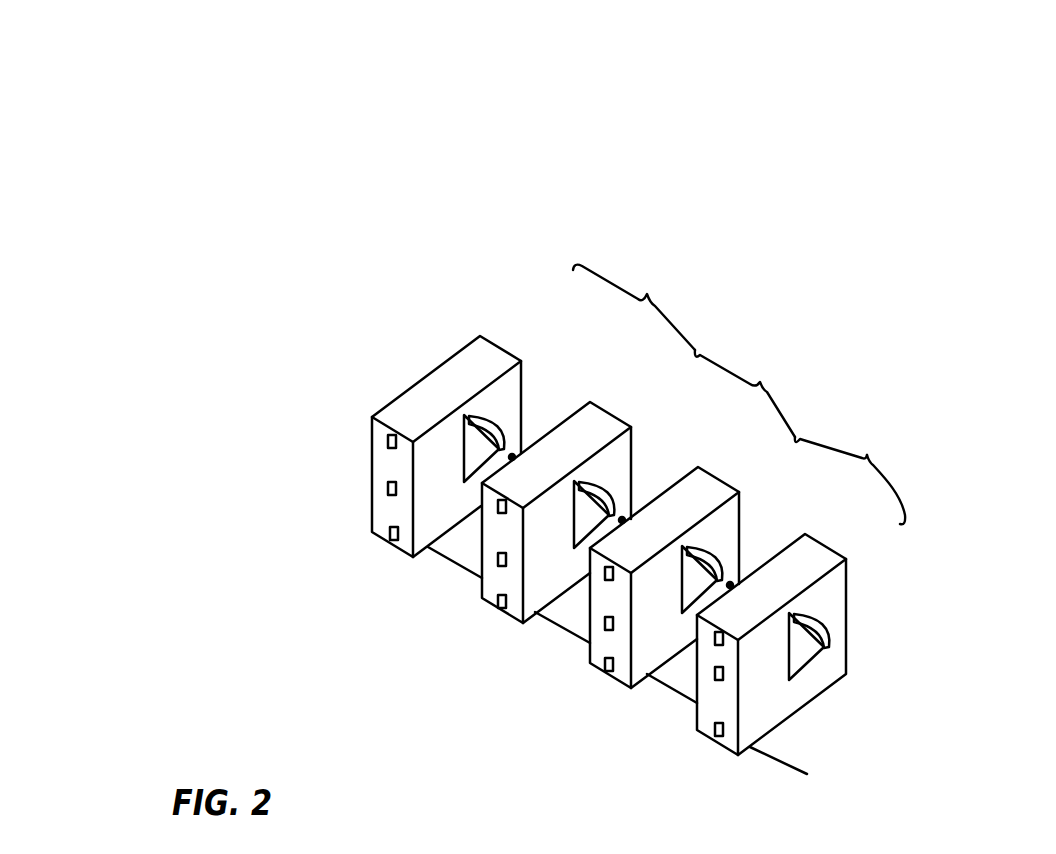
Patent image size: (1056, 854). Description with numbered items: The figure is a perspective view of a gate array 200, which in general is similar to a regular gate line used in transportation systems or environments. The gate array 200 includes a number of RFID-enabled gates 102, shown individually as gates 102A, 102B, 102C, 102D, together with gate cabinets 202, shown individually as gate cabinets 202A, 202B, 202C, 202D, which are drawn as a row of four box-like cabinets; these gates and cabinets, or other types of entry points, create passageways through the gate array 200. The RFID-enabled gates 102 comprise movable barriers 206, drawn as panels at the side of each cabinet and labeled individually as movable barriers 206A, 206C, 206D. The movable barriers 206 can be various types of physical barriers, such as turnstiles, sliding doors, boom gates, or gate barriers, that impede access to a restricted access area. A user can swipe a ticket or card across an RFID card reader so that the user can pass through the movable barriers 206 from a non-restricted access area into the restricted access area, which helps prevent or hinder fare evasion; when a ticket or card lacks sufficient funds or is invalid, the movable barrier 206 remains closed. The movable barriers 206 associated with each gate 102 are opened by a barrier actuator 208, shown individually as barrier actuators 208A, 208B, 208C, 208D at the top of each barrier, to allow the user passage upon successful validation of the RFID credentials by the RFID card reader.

The gate array 200 is at (906, 104).
The RFID-enabled gates 102 is at (800, 302).
The RFID-enabled gate 102A is at (642, 307).
The RFID-enabled gate 102B is at (765, 393).
The RFID-enabled gate 102C is at (849, 432).
The RFID-enabled gate 102D is at (909, 489).
The gate cabinets 202 is at (481, 321).
The gate cabinet 202A is at (463, 453).
The gate cabinet 202B is at (573, 518).
The gate cabinet 202C is at (680, 592).
The gate cabinet 202D is at (788, 666).
The movable barriers 206 is at (433, 435).
The movable barrier 206A is at (492, 340).
The movable barrier 206C is at (716, 482).
The movable barrier 206D is at (827, 547).
The barrier actuator 208 is at (456, 402).
The barrier actuator 208A is at (466, 418).
The barrier actuator 208B is at (574, 481).
The barrier actuator 208C is at (682, 548).
The barrier actuator 208D is at (792, 613).